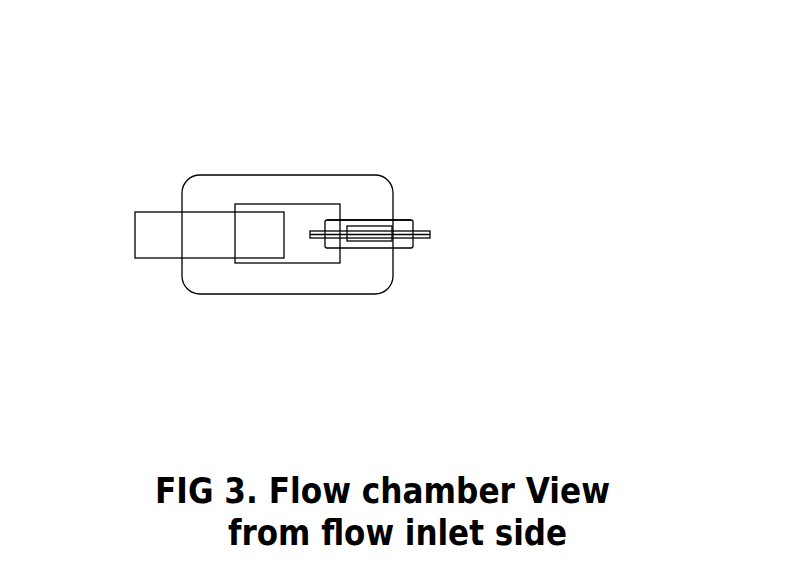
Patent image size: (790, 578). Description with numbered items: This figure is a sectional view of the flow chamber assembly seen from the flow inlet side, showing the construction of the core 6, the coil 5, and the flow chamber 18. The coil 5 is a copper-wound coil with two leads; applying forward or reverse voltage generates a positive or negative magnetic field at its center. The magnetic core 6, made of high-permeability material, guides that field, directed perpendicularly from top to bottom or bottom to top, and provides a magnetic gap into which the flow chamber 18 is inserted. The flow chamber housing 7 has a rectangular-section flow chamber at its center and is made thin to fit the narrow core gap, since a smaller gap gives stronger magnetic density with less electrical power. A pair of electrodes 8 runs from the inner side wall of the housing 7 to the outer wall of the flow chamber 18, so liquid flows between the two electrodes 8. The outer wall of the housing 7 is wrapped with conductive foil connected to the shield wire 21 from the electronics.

The coil 5 is at (173, 233).
The magnetic core 6 is at (220, 182).
The flow chamber housing 7 is at (412, 247).
The pair of electrodes 8 is at (431, 231).
The flow chamber 18 is at (365, 233).
The shield wire 21 is at (403, 218).